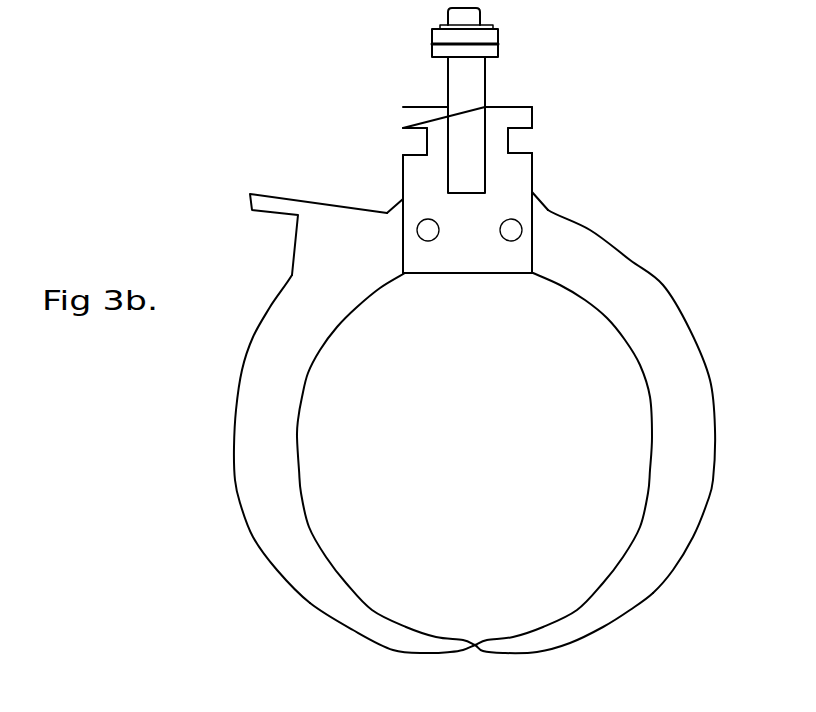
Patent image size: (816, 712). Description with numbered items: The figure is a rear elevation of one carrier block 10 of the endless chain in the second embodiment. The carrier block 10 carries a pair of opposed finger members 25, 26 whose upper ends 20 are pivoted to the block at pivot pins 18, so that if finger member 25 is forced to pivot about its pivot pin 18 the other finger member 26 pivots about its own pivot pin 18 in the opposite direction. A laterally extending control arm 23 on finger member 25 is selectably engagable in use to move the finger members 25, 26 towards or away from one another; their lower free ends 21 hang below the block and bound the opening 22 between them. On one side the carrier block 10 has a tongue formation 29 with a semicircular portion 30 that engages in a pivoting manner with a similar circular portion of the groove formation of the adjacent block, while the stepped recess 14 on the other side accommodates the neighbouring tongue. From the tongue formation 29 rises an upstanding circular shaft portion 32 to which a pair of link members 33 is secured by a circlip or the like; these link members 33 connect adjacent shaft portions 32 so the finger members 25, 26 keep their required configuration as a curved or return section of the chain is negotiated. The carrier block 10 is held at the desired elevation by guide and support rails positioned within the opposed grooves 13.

The carrier block 10 is at (435, 122).
The opposed grooves 13 is at (512, 143).
The left notch 14 is at (410, 145).
The pivot pin 18 is at (417, 236).
The upper ends 20 is at (397, 207).
The arm tips 21 is at (333, 603).
The opening 22 is at (481, 369).
The control arm 23 is at (287, 208).
The finger member 25 is at (258, 393).
The finger member 26 is at (675, 398).
The tongue formation 29 is at (493, 113).
The semicircular portion 30 is at (498, 187).
The upstanding circular shaft portion 32 is at (468, 82).
The link members 33 is at (442, 50).